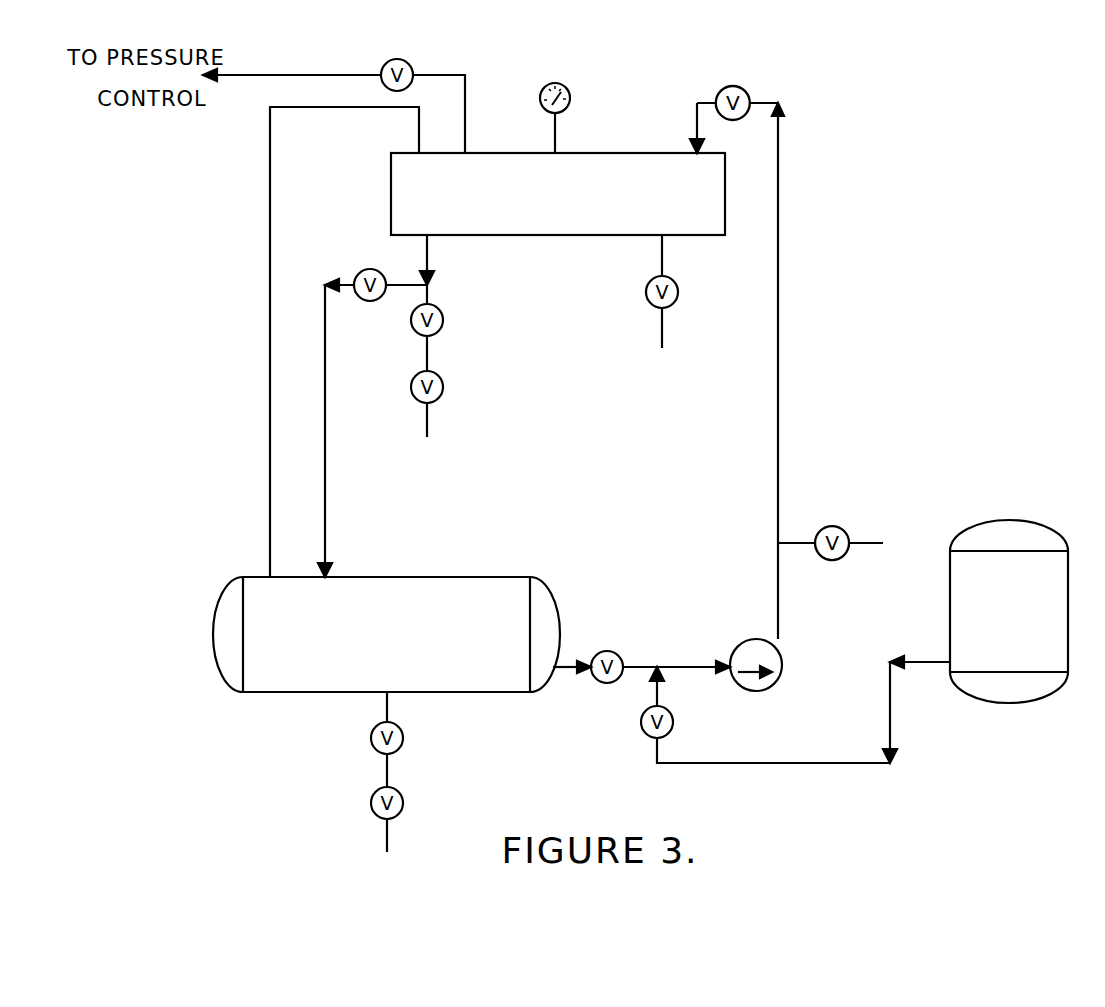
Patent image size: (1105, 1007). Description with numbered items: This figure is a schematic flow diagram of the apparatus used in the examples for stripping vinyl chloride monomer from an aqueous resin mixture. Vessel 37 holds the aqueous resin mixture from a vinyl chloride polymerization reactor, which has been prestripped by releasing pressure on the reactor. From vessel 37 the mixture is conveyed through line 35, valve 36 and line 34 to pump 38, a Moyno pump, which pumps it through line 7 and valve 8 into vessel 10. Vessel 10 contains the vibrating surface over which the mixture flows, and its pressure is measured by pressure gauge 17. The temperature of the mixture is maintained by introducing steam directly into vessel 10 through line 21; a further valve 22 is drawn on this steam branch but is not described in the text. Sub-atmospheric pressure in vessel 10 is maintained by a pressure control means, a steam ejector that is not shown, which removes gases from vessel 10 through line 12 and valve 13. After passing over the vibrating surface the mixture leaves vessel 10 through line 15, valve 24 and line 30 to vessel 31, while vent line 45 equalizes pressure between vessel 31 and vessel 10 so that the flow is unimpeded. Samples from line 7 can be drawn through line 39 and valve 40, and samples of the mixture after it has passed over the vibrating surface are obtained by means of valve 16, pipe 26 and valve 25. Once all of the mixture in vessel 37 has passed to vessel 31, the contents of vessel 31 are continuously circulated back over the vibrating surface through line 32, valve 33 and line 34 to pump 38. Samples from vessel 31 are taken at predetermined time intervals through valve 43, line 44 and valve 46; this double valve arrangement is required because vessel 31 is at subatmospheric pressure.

The line 7 is at (780, 119).
The valve 8 is at (742, 88).
The vessel 10 is at (608, 153).
The line 12 is at (466, 82).
The valve 13 is at (409, 64).
The line 15 is at (430, 264).
The valve 16 is at (443, 322).
The pressure gauge 17 is at (568, 90).
The line 21 is at (662, 253).
The valve 22 is at (678, 292).
The valve 24 is at (366, 270).
The valve 25 is at (442, 392).
The pipe 26 is at (428, 358).
The line 30 is at (325, 413).
The vessel 31 is at (398, 577).
The line 32 is at (566, 669).
The valve 33 is at (609, 651).
The line 34 is at (643, 667).
The line 35 is at (659, 696).
The valve 36 is at (673, 726).
The vessel 37 is at (950, 601).
The pump 38 is at (775, 651).
The line 39 is at (790, 543).
The valve 40 is at (847, 536).
The valve 43 is at (403, 737).
The line 44 is at (388, 774).
The vent line 45 is at (268, 440).
The valve 46 is at (403, 803).